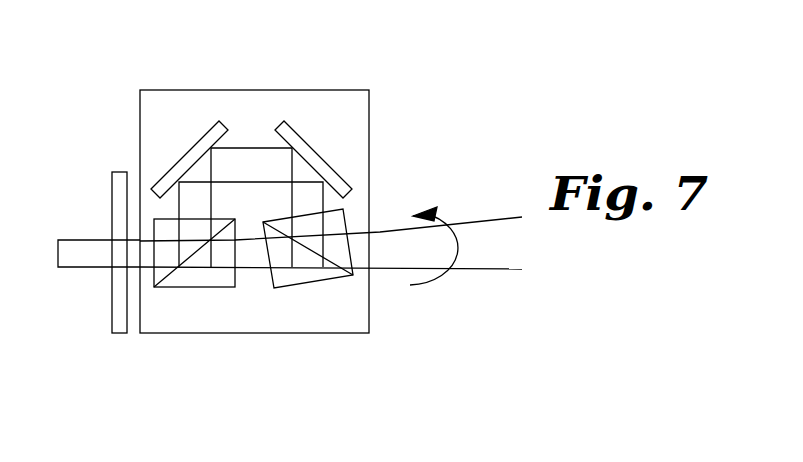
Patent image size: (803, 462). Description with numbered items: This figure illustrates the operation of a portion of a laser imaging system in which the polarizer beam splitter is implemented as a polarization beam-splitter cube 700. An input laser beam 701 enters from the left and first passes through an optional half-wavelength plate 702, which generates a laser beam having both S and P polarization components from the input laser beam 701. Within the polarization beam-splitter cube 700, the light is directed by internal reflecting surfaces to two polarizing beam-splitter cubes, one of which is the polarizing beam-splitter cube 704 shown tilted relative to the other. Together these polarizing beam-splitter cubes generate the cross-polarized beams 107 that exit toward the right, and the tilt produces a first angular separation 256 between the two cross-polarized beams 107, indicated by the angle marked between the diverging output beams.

The polarization beam-splitter cube 700 is at (140, 117).
The input laser beam 701 is at (88, 239).
The half-wavelength plate 702 is at (120, 171).
The polarizing beam-splitter cube 704 is at (315, 288).
The cross-polarized beams 107 is at (478, 218).
The first angular separation 256 is at (407, 308).